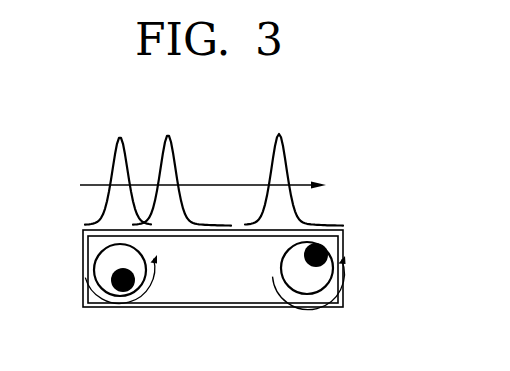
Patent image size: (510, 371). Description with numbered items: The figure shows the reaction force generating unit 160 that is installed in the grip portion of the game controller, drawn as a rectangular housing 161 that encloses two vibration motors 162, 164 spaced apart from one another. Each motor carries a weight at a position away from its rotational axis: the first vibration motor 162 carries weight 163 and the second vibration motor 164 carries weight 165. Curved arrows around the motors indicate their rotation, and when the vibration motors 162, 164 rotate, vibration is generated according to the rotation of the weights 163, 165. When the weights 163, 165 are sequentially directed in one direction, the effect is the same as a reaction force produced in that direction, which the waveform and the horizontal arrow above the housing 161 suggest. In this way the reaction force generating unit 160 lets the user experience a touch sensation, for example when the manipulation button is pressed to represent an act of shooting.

The reaction force generating unit 160 is at (367, 217).
The housing 161 is at (212, 305).
The vibration motor 162 is at (103, 273).
The weight 163 is at (122, 286).
The vibration motor 164 is at (301, 280).
The weight 165 is at (322, 265).